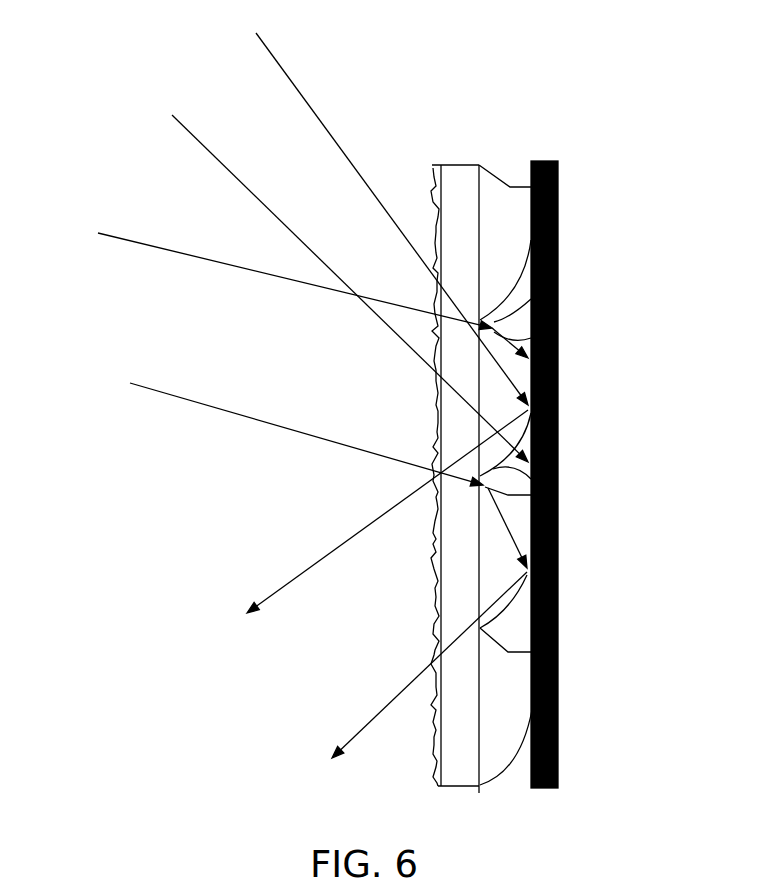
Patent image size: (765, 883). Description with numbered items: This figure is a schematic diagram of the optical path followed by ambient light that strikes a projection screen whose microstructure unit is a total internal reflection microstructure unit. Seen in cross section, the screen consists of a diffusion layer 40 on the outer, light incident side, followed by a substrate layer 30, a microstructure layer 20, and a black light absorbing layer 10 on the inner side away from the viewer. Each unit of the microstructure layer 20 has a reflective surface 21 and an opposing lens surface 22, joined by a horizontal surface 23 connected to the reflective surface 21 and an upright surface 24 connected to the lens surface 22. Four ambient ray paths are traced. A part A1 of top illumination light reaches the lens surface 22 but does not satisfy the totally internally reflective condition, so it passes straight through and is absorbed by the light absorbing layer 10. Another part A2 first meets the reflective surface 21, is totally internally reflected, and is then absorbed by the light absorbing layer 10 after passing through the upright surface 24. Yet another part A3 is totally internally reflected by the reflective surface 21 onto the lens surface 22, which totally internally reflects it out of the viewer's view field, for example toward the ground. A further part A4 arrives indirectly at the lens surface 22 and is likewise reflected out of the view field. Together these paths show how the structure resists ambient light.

The light absorbing layer 10 is at (543, 161).
The microstructure layer 20 is at (515, 197).
The reflective surface 21 is at (558, 285).
The lens surface 22 is at (558, 480).
The horizontal surface 23 is at (558, 315).
The upright surface 24 is at (558, 378).
The substrate layer 30 is at (461, 180).
The diffusion layer 40 is at (432, 177).
The part of top illumination light A1 is at (319, 277).
The part of ambient light A2 is at (267, 274).
The part of ambient light rays A3 is at (299, 561).
The part of ambient light A4 is at (363, 311).